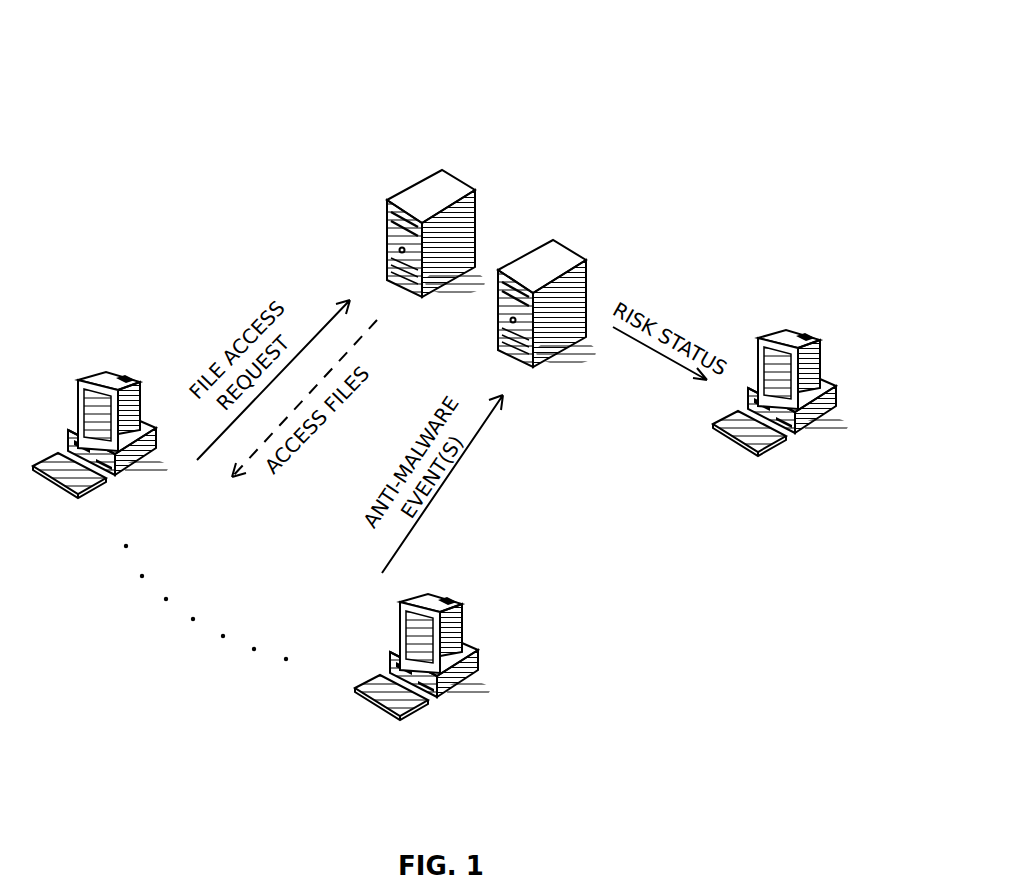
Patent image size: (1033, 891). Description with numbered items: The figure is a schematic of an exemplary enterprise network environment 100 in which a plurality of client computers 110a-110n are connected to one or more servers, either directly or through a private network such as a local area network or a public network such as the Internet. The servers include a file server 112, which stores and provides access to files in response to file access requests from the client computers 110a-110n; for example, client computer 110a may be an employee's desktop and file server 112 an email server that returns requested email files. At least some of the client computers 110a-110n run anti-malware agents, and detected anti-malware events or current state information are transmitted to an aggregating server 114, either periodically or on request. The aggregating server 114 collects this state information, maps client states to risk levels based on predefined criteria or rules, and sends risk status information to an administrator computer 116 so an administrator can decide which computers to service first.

The network environment 100 is at (667, 102).
The client computer 110a is at (77, 380).
The client computer 110n is at (467, 628).
The file server 112 is at (413, 140).
The aggregating server 114 is at (650, 203).
The administrator computer 116 is at (790, 338).